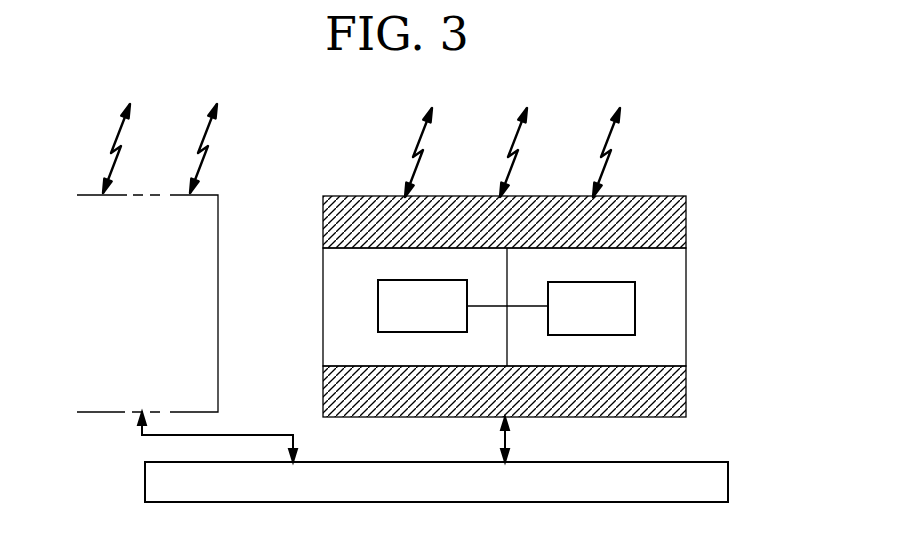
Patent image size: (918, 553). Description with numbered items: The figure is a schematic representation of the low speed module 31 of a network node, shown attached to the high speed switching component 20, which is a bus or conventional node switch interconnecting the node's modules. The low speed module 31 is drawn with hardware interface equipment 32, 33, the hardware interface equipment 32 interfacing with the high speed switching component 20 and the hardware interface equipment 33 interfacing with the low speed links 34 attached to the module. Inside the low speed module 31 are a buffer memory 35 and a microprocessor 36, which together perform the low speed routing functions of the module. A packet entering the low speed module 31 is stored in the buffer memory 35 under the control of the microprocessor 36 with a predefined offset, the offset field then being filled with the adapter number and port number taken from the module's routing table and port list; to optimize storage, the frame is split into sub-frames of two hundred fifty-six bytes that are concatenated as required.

The high speed switching component 20 is at (728, 492).
The low speed module 31 is at (322, 320).
The hardware interface equipment 32 is at (686, 387).
The hardware interface equipment 33 is at (686, 228).
The low speed links 34 is at (388, 155).
The buffer memory 35 is at (635, 302).
The microprocessor 36 is at (378, 305).